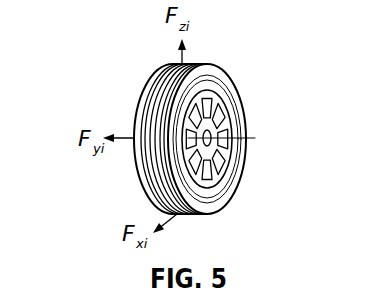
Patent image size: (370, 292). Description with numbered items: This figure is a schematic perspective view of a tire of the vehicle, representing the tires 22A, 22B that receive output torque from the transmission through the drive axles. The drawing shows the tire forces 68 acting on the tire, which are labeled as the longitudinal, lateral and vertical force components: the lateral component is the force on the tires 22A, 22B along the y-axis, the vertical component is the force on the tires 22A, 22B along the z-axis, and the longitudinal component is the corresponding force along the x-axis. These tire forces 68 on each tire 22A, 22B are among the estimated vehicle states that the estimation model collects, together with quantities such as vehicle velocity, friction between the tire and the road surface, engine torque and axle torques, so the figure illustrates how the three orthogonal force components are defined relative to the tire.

The tire forces 68 is at (90, 56).
The tire 22A is at (220, 68).
The tire 22B is at (220, 68).